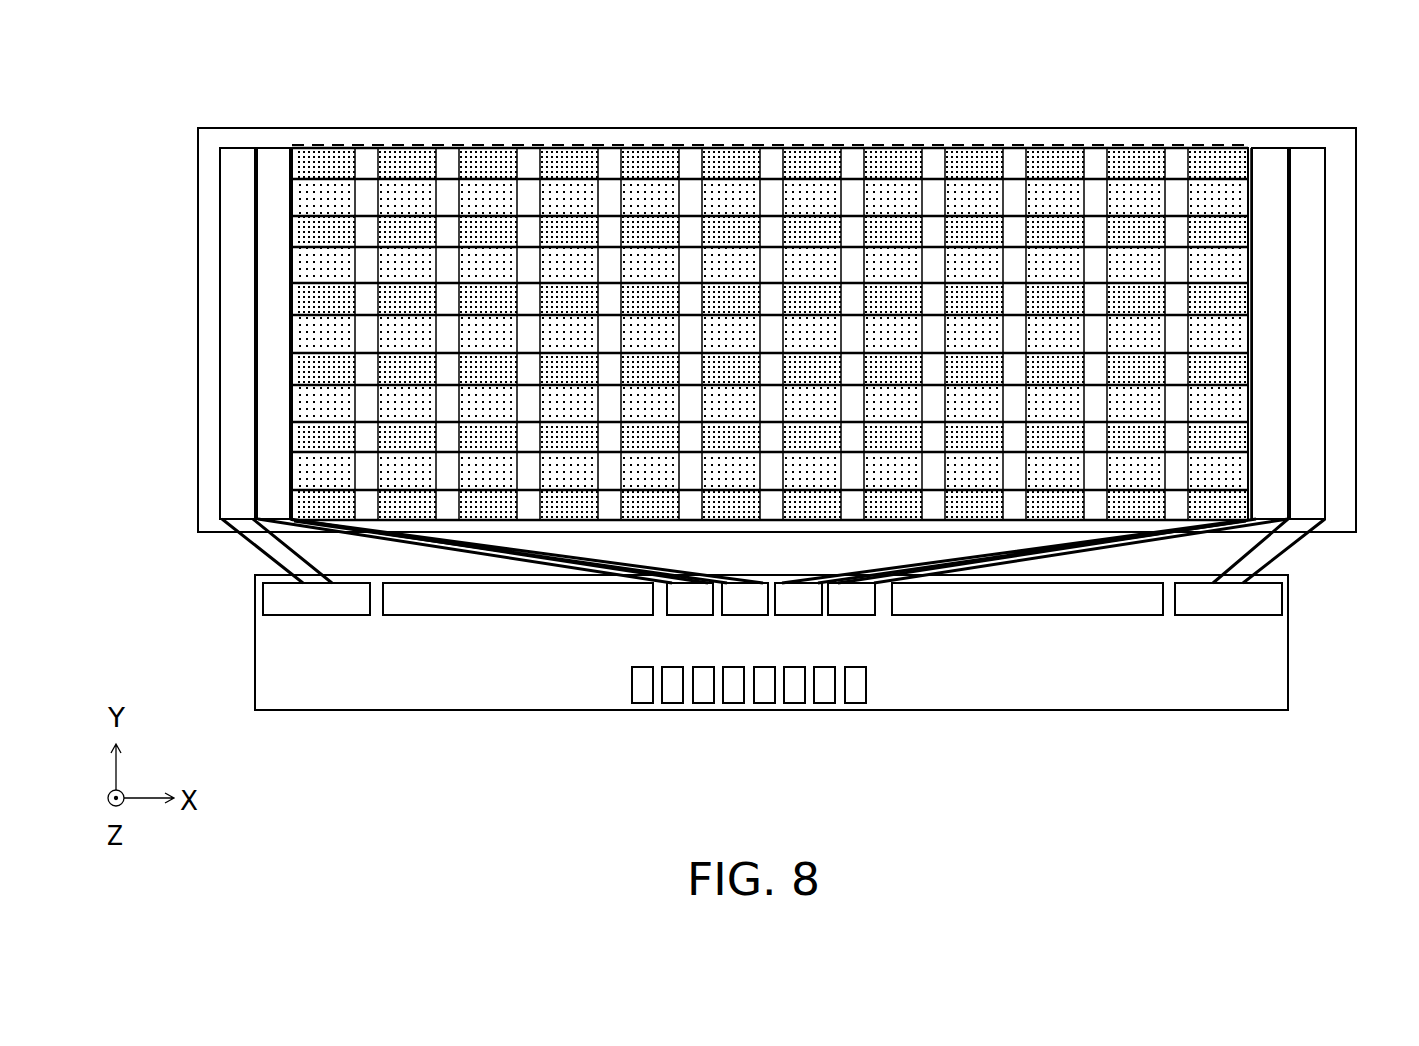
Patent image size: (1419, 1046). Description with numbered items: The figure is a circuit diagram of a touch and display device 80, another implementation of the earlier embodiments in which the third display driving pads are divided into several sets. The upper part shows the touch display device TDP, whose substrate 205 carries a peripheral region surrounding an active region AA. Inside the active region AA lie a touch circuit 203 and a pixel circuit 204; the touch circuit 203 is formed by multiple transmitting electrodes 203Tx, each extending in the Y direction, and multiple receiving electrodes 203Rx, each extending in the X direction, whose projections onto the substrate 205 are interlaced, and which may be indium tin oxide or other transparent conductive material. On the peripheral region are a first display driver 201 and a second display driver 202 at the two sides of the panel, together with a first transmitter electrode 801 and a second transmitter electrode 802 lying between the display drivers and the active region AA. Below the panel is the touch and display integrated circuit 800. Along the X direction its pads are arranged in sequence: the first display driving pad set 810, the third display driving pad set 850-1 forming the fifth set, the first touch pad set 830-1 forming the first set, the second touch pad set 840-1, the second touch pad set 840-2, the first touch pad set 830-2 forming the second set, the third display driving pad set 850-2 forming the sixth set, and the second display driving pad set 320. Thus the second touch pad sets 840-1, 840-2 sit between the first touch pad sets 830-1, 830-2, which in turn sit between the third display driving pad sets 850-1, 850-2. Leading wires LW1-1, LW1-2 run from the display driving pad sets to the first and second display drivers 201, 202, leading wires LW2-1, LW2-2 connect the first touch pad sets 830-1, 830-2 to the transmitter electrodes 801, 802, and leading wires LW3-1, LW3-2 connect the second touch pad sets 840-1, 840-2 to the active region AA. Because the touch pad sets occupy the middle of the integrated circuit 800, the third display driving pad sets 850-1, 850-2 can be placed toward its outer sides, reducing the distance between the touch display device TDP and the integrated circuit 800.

The touch and display device 80 is at (1383, 793).
The substrate 205 is at (103, 90).
The touch display device TDP is at (198, 137).
The first display driver 201 is at (238, 160).
The second display driver 202 is at (1305, 160).
The first transmitter electrode 801 is at (275, 160).
The second transmitter electrode 802 is at (1270, 160).
The active region AA is at (771, 273).
The touch circuit 203 is at (771, 274).
The pixel circuit 204 is at (770, 299).
The transmitting electrodes 203Tx is at (330, 192).
The receiving electrodes 203Rx is at (450, 162).
The touch and display integrated circuit 800 is at (253, 645).
The first display driving pad set 810 is at (316, 616).
The second display driving pad set 320 is at (1238, 616).
The first touch pad set 830-1 is at (668, 616).
The first touch pad set 830-2 is at (872, 616).
The second touch pad set 840-1 is at (740, 616).
The second touch pad set 840-2 is at (790, 616).
The third display driving pad set 850-1 is at (432, 616).
The third display driving pad set 850-2 is at (1073, 616).
The first gate lead wires LW1-1 is at (262, 550).
The second gate lead wires LW1-2 is at (1276, 553).
The leading wire LW2-1 is at (490, 556).
The leading wire LW2-2 is at (1108, 548).
The leading wire LW3-1 is at (640, 557).
The leading wire LW3-2 is at (945, 558).